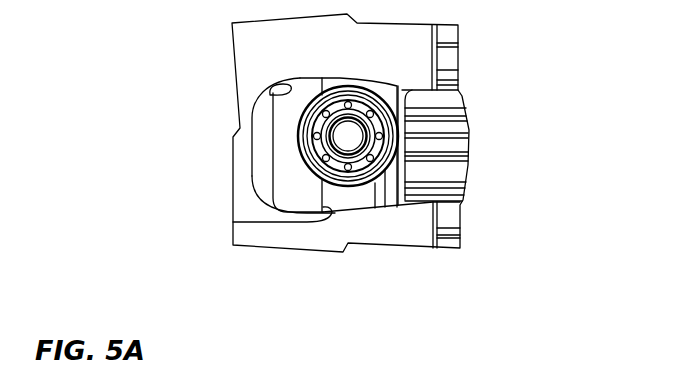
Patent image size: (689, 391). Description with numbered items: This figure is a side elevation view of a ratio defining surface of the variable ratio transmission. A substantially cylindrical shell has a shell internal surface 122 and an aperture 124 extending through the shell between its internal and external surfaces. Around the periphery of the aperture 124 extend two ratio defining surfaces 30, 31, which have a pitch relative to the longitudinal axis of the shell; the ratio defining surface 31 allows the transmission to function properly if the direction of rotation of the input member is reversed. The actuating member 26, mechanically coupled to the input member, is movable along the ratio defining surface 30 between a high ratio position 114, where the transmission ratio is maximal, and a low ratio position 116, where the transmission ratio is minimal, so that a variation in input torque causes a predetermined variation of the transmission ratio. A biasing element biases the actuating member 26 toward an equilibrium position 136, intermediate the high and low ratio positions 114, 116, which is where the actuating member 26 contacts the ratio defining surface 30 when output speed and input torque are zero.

The actuating member 26 is at (343, 140).
The ratio defining surface 30 is at (283, 88).
The ratio defining surface 31 is at (240, 221).
The high ratio position 114 is at (405, 88).
The low ratio position 116 is at (292, 104).
The shell internal surface 122 is at (398, 235).
The aperture 124 is at (260, 170).
The equilibrium position 136 is at (340, 77).